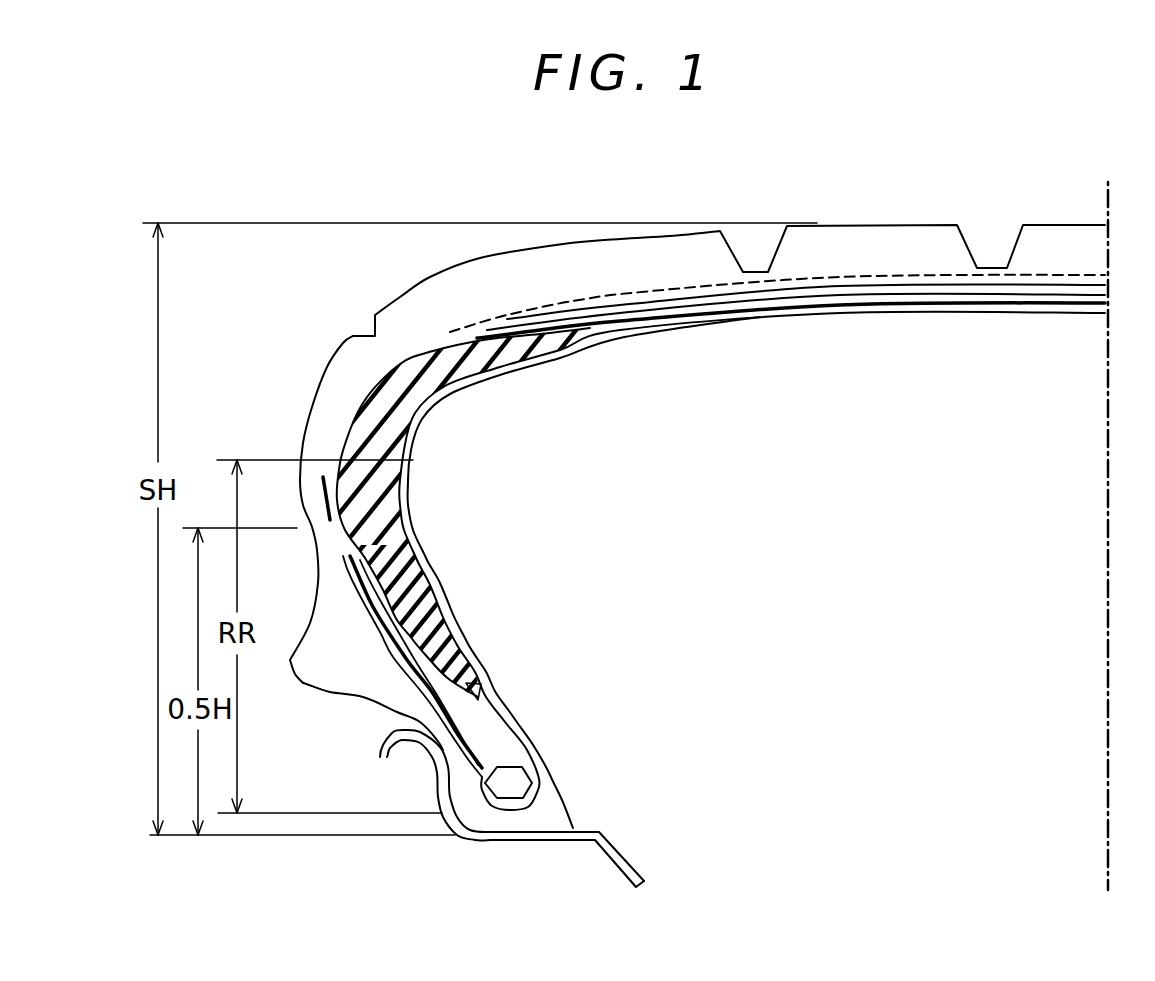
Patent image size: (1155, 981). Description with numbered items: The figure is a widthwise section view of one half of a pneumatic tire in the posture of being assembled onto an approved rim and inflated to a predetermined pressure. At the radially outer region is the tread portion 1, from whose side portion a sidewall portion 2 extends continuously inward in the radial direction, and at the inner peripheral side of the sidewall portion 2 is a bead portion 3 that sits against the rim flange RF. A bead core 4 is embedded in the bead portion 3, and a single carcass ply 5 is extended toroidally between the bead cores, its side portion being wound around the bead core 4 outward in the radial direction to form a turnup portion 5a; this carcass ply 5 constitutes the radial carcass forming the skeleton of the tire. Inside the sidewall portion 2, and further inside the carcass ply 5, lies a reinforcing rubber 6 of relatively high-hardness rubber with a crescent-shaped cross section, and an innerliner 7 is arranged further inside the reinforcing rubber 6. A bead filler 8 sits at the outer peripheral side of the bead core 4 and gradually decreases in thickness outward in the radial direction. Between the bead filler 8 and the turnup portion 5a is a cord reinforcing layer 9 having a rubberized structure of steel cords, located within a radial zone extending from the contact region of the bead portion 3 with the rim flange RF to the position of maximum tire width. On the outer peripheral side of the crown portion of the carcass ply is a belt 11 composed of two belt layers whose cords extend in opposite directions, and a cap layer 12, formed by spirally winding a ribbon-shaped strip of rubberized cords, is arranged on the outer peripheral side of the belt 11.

The tread portion 1 is at (896, 208).
The sidewall portion 2 is at (296, 442).
The bead portion 3 is at (556, 746).
The bead core 4 is at (512, 787).
The carcass ply 5 is at (472, 335).
The turnup portion 5a is at (327, 507).
The reinforcing rubber 6 is at (373, 504).
The innerliner 7 is at (416, 550).
The bead filler 8 is at (485, 735).
The cord reinforcing layer 9 is at (397, 640).
The belt 11 is at (570, 306).
The cap layer 12 is at (673, 285).
The rim flange RF is at (443, 757).